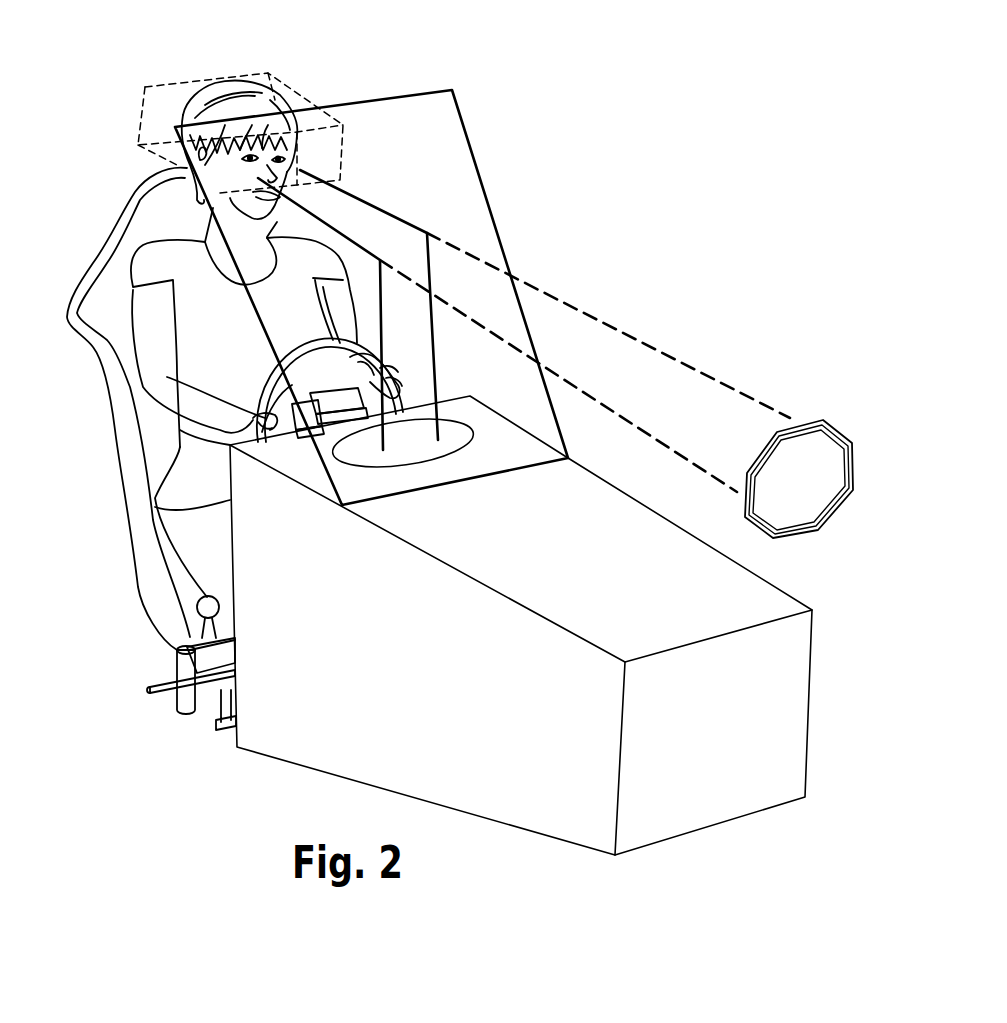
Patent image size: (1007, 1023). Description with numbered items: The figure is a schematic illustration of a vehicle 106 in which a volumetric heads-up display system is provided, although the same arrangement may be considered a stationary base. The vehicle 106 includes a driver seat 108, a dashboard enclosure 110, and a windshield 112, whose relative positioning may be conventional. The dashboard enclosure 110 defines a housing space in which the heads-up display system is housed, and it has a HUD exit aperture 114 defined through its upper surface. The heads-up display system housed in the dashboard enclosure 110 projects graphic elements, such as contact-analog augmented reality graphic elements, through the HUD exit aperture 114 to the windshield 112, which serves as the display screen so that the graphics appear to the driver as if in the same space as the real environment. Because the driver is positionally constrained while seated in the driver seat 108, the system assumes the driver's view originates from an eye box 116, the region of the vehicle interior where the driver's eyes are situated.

The vehicle 106 is at (630, 97).
The driver seat 108 is at (84, 282).
The dashboard enclosure 110 is at (287, 462).
The windshield 112 is at (492, 215).
The HUD exit aperture 114 is at (465, 437).
The eye box 116 is at (291, 86).